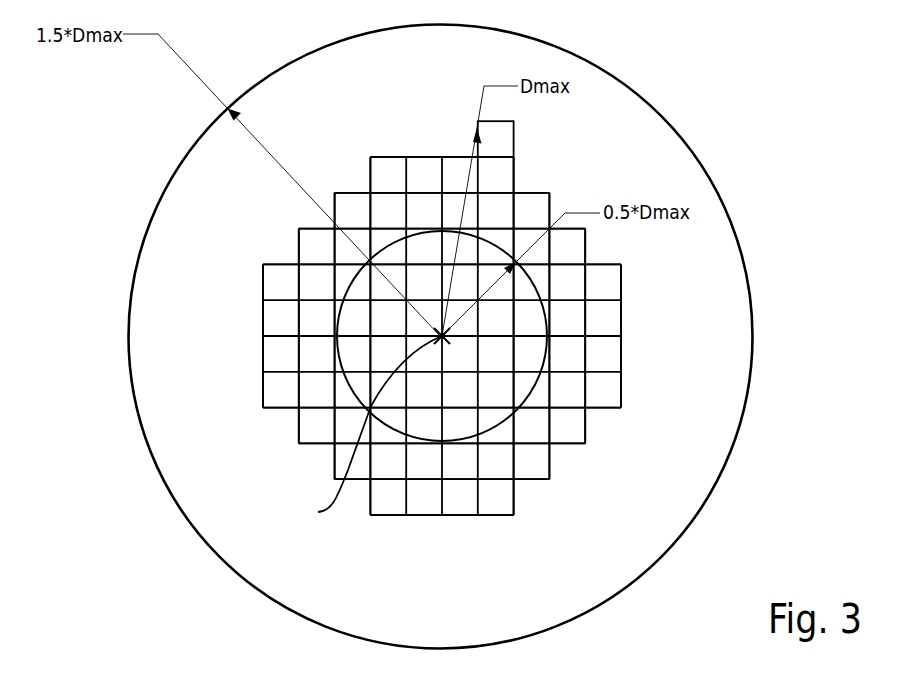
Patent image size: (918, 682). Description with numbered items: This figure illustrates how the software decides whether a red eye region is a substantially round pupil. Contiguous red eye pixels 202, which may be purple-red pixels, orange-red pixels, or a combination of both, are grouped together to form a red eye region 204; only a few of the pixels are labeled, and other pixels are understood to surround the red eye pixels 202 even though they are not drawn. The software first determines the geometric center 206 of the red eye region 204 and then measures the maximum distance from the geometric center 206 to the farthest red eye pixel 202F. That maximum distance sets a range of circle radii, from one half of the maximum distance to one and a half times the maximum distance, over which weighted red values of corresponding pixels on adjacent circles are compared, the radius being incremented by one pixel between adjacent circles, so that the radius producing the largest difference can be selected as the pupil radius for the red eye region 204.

The red eye pixels 202 is at (514, 176).
The farthest red eye pixel 202F is at (514, 141).
The red eye region 204 is at (352, 166).
The geometric center 206 is at (318, 512).